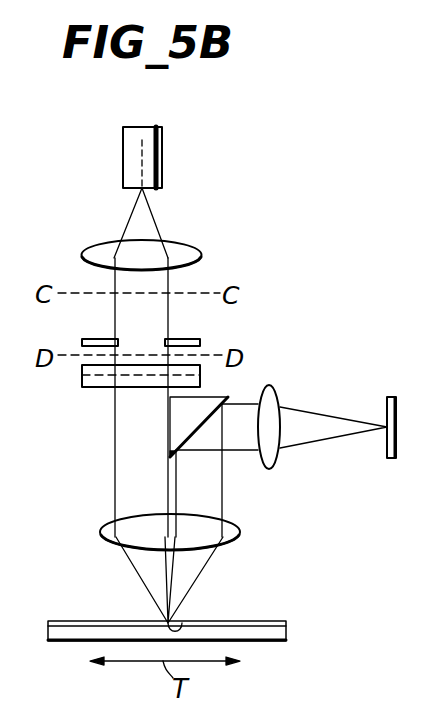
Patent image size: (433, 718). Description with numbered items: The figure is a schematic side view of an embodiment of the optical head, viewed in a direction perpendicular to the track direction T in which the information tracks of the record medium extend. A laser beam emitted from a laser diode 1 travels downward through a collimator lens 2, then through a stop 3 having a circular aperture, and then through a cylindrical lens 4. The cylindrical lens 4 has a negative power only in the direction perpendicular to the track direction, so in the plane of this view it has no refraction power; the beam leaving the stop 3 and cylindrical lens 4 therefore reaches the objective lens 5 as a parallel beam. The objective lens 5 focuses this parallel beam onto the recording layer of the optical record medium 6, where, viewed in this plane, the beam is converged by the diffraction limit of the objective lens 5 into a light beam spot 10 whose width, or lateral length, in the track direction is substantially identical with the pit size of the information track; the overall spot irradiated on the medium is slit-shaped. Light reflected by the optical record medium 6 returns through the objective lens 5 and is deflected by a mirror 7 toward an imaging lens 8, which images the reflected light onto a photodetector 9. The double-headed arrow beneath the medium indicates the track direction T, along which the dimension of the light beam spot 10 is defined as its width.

The laser diode 1 is at (162, 162).
The collimator lens 2 is at (187, 245).
The stop 3 is at (83, 339).
The cylindrical lens 4 is at (82, 387).
The objective lens 5 is at (100, 532).
The optical record medium 6 is at (287, 625).
The mirror 7 is at (228, 397).
The imaging lens 8 is at (274, 464).
The photodetector 9 is at (391, 397).
The light beam spot 10 is at (183, 630).